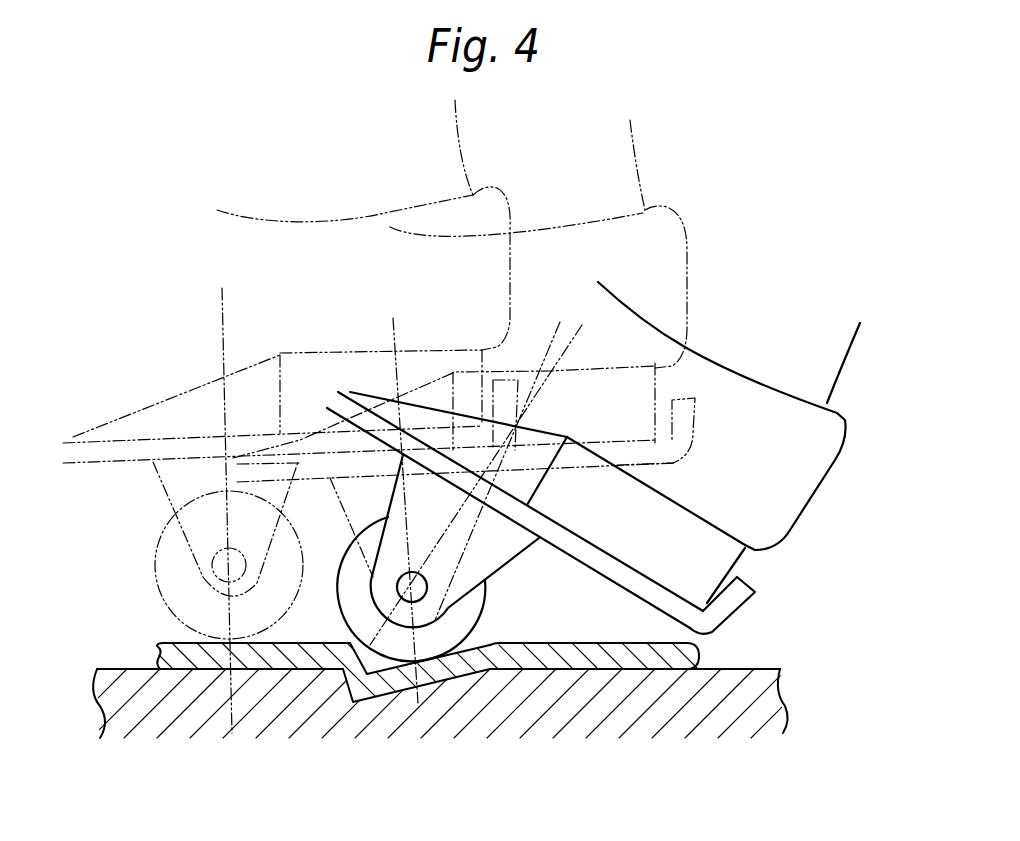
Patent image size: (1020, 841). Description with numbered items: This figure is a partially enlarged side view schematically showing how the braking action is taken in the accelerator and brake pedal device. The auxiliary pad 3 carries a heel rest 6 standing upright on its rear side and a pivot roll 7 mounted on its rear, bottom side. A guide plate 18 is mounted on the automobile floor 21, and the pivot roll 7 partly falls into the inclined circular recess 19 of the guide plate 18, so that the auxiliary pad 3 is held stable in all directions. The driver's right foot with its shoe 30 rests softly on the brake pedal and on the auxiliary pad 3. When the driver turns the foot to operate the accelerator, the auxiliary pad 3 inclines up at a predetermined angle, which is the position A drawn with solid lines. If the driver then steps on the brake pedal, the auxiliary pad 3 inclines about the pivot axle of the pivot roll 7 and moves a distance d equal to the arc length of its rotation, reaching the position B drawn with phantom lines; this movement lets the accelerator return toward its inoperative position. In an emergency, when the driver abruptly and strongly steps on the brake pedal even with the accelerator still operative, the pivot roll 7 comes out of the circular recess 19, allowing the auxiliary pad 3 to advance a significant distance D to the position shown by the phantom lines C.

The auxiliary pad 3 is at (615, 573).
The heel rest 6 is at (727, 610).
The pivot roll 7 is at (460, 623).
The guide plate 18 is at (158, 655).
The inclined circular recess 19 is at (375, 665).
The automobile floor 21 is at (112, 712).
The shoe 30 is at (793, 473).
The position A is at (790, 552).
The position B is at (690, 216).
The phantom lines C is at (502, 190).
The distance D is at (568, 343).
The distance d is at (568, 343).